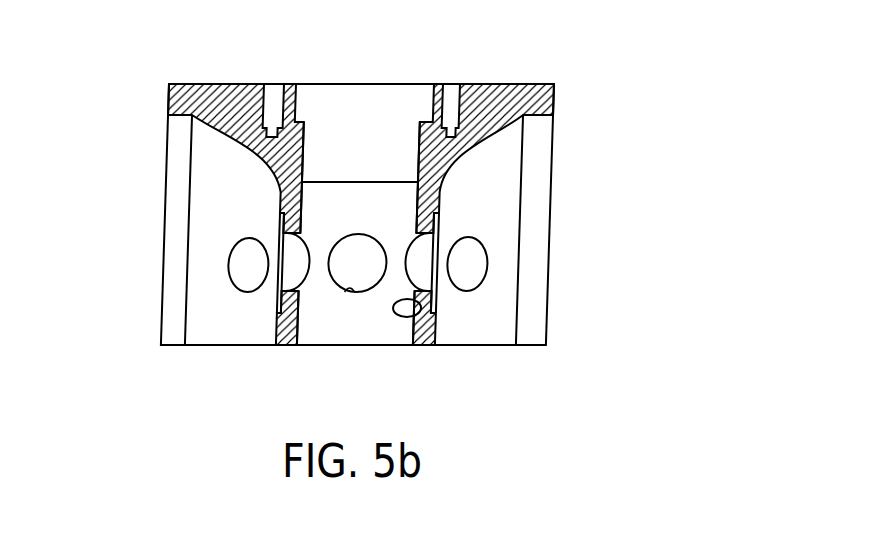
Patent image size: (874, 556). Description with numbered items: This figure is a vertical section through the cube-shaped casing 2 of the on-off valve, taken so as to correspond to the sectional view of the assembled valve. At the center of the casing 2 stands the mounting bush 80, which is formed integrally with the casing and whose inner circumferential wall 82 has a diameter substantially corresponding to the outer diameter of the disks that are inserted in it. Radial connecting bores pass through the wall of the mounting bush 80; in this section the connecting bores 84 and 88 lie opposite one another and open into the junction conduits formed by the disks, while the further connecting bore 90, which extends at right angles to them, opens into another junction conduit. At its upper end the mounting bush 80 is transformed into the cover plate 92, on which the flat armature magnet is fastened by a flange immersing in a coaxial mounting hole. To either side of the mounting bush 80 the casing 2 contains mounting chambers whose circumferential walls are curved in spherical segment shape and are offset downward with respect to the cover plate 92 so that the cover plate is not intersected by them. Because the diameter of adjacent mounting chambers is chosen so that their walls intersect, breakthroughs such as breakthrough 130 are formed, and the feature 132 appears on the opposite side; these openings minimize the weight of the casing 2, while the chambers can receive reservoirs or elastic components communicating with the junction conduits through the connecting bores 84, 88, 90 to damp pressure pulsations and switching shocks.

The casing 2 is at (168, 100).
The mounting bush 80 is at (437, 198).
The inner circumferential wall 82 is at (437, 323).
The connecting bore 84 is at (437, 256).
The connecting bore 88 is at (278, 242).
The connecting bore 90 is at (350, 290).
The cover plate 92 is at (537, 85).
The breakthrough 130 is at (236, 270).
The right side opening 132 is at (473, 271).